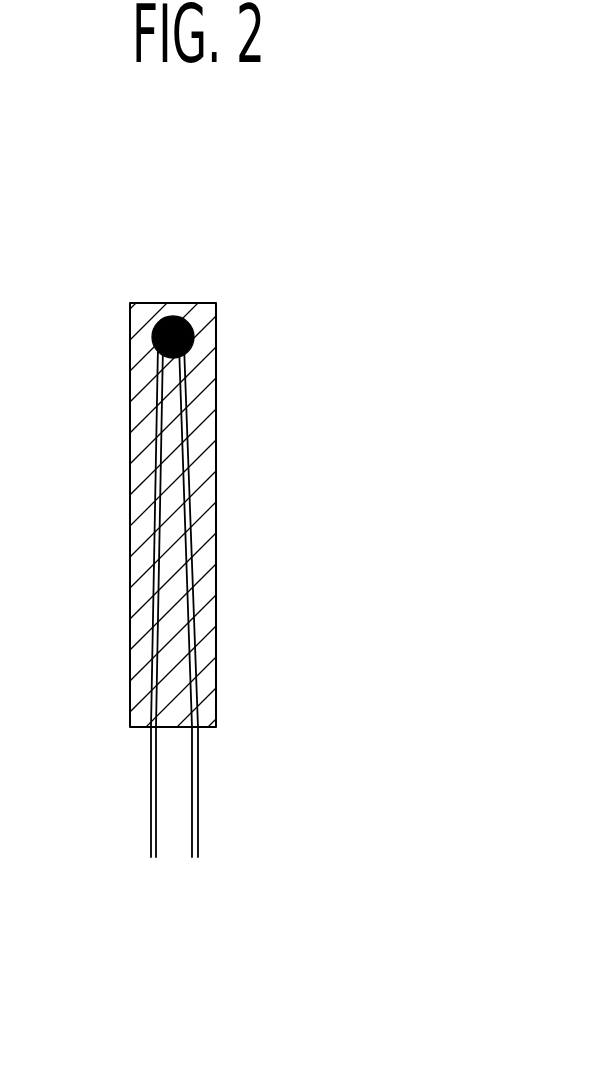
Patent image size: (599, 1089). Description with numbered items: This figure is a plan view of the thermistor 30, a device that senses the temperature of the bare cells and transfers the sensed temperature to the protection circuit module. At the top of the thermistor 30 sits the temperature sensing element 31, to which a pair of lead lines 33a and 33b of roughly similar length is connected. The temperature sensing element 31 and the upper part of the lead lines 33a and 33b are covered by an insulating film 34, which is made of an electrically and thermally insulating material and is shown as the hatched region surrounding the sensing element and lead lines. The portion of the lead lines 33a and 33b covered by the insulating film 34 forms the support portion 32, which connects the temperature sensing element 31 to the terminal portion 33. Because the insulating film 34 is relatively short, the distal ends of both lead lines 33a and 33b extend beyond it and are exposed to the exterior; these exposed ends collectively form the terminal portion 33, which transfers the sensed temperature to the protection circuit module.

The thermistor 30 is at (263, 235).
The temperature sensing element 31 is at (173, 307).
The support portion 32 is at (130, 728).
The terminal portion 33 is at (188, 674).
The lead line 33a is at (153, 857).
The lead line 33b is at (216, 639).
The insulating film 34 is at (195, 432).